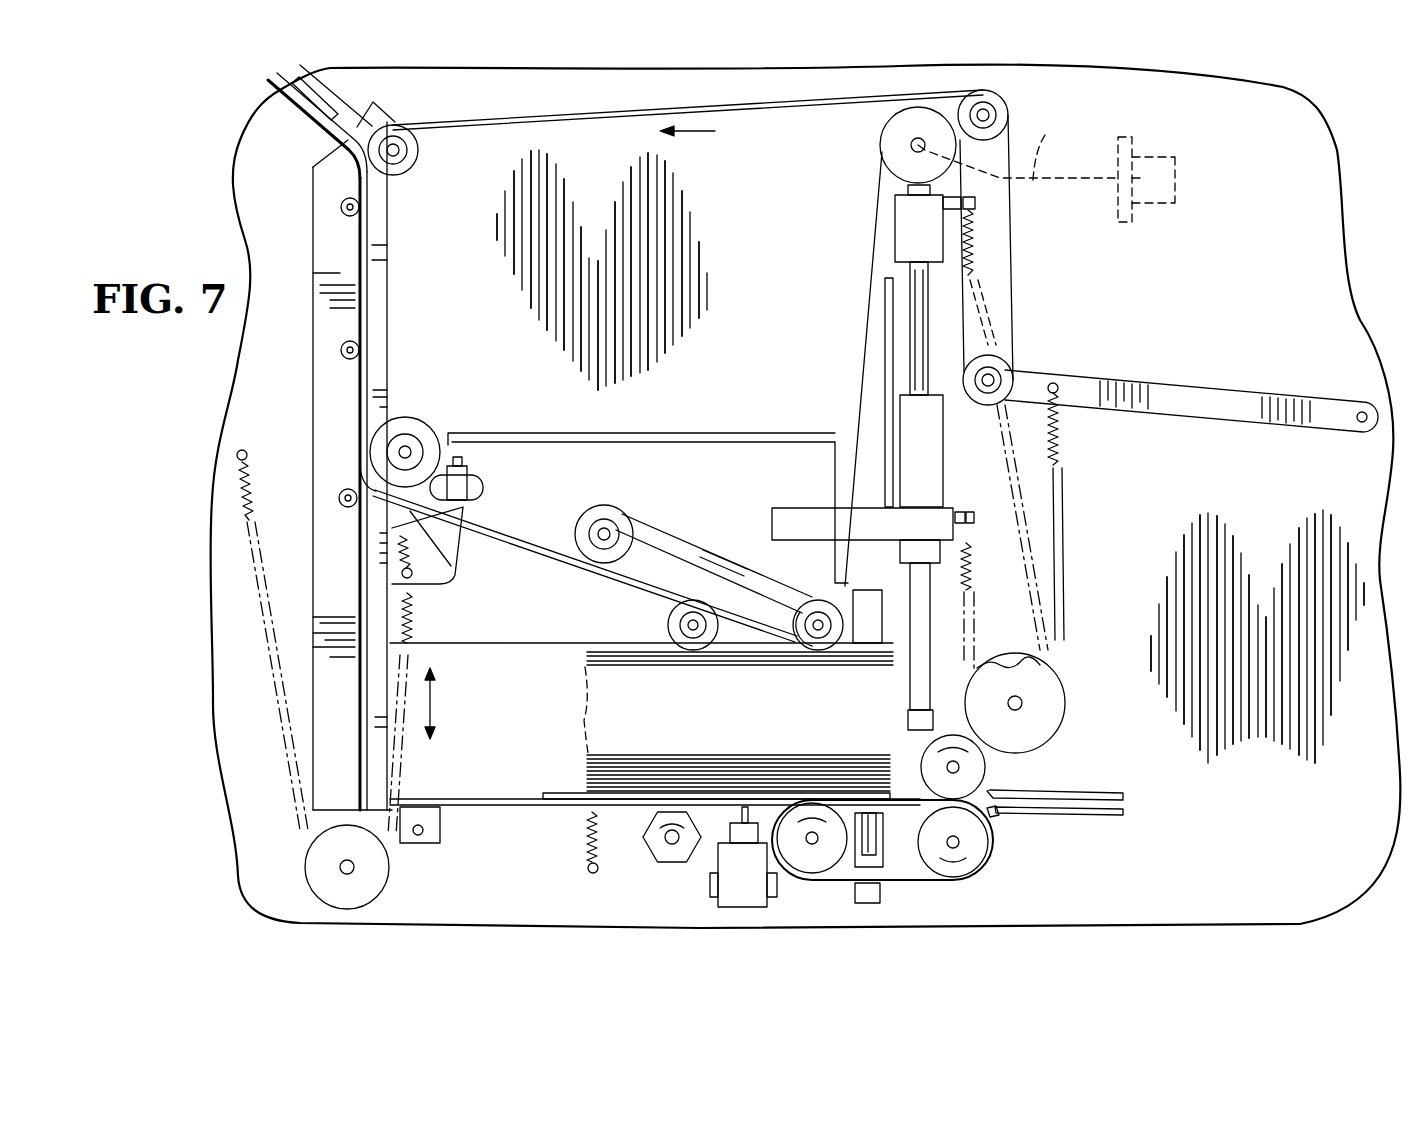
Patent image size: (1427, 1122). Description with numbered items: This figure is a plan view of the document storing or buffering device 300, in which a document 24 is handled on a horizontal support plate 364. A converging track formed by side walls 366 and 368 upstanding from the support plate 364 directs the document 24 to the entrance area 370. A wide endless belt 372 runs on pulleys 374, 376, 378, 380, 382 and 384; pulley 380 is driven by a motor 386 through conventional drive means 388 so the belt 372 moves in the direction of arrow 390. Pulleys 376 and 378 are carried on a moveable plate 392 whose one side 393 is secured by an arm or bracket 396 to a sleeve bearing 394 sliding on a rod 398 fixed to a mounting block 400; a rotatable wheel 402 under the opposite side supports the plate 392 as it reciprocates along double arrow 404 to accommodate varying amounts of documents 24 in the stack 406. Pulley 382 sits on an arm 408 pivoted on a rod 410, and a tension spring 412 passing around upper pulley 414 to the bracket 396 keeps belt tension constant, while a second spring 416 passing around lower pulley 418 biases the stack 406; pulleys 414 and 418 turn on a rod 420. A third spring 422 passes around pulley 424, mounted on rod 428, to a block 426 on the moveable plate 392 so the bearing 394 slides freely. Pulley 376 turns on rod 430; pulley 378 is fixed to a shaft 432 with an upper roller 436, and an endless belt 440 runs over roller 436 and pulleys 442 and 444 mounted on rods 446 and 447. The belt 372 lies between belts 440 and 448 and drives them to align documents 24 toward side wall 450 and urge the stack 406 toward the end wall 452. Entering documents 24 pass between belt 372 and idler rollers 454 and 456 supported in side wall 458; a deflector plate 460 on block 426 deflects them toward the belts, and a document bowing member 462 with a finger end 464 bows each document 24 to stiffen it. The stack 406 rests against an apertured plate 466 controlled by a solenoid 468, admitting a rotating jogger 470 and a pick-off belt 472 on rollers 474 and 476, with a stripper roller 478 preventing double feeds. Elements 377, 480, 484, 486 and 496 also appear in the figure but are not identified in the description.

The document 24 is at (312, 118).
The document storing or buffering device 300 is at (1330, 114).
The support plate 364 is at (243, 163).
The side wall 366 is at (285, 96).
The side wall 368 is at (373, 99).
The entrance area 370 is at (348, 160).
The wide endless belt 372 is at (1013, 300).
The pulley 374 is at (416, 152).
The pulley 376 is at (410, 418).
The web 377 is at (686, 450).
The pulley 378 is at (795, 612).
The pulley 380 is at (890, 130).
The pulley 382 is at (1005, 370).
The pulley 384 is at (995, 102).
The motor 386 is at (1178, 178).
The drive means 388 is at (1045, 140).
The arrow 390 is at (690, 132).
The moveable plate 392 is at (562, 468).
The side 393 is at (818, 485).
The sleeve bearing 394 is at (928, 477).
The bracket 396 is at (795, 505).
The rod 398 is at (913, 272).
The mounting block 400 is at (900, 215).
The rotatable wheel 402 is at (468, 468).
The double arrow 404 is at (440, 700).
The document stack 406 is at (580, 723).
The arm 408 is at (1191, 490).
The rod 410 is at (1362, 422).
The tension spring 412 is at (1060, 445).
The upper pulley 414 is at (1039, 695).
The second tension spring 416 is at (985, 258).
The lower pulley 418 is at (1020, 655).
The rod 420 is at (1022, 705).
The third tension spring 422 is at (250, 505).
The pulley 424 is at (375, 880).
The block 426 is at (437, 590).
The rod 428 is at (347, 867).
The rod 430 is at (407, 450).
The shaft 432 is at (822, 645).
The upper roller 436 is at (808, 642).
The endless belt 440 is at (618, 592).
The pulley 442 is at (604, 525).
The pulley 444 is at (670, 630).
The rod 446 is at (617, 525).
The rod 447 is at (690, 640).
The endless belt 448 is at (680, 538).
The side wall 450 is at (886, 320).
The end wall 452 is at (480, 805).
The idler roller 454 is at (343, 212).
The idler roller 456 is at (342, 350).
The side wall 458 is at (355, 412).
The deflector plate 460 is at (340, 492).
The document bowing member 462 is at (444, 541).
The finger end 464 is at (482, 491).
The plate 466 is at (543, 795).
The solenoid 468 is at (722, 898).
The jogger 470 is at (665, 855).
The pick-off belt 472 is at (916, 824).
The roller 474 is at (978, 858).
The roller 476 is at (807, 855).
The stripper roller 478 is at (982, 772).
The exit direction 480 is at (1128, 805).
The bracket 484 is at (866, 812).
The bracket 486 is at (868, 638).
The guide 496 is at (1000, 818).